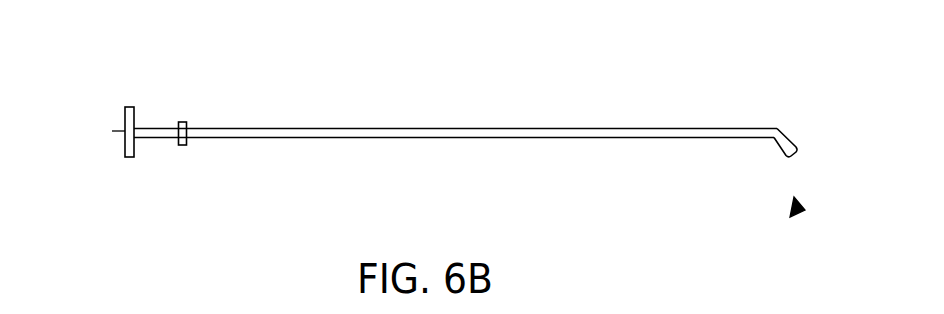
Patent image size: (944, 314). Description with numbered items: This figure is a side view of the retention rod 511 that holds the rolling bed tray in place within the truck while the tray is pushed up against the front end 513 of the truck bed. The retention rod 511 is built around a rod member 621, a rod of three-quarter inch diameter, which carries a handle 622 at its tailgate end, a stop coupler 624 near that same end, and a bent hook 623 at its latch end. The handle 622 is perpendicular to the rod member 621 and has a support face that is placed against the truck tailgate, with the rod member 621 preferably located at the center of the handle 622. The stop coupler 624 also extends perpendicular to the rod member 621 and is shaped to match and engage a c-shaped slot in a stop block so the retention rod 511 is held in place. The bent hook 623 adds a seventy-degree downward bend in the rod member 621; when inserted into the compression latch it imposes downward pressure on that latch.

The retention rod 511 is at (797, 213).
The front end 513 is at (112, 131).
The rod member 621 is at (438, 128).
The handle 622 is at (128, 107).
The bent hook 623 is at (778, 128).
The stop coupler 624 is at (182, 122).